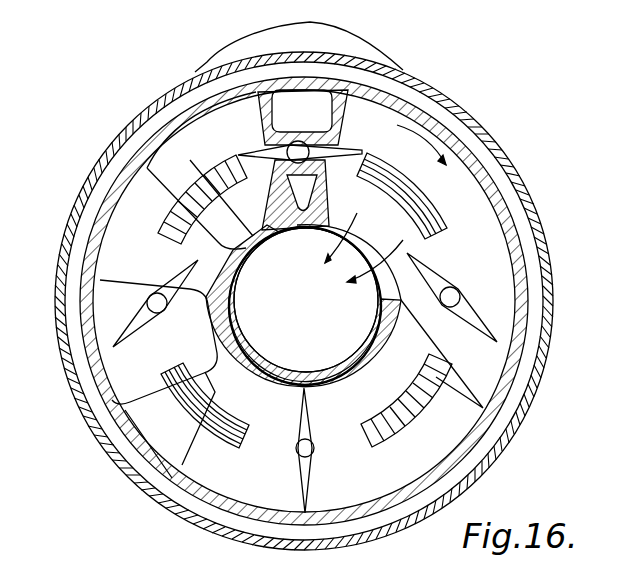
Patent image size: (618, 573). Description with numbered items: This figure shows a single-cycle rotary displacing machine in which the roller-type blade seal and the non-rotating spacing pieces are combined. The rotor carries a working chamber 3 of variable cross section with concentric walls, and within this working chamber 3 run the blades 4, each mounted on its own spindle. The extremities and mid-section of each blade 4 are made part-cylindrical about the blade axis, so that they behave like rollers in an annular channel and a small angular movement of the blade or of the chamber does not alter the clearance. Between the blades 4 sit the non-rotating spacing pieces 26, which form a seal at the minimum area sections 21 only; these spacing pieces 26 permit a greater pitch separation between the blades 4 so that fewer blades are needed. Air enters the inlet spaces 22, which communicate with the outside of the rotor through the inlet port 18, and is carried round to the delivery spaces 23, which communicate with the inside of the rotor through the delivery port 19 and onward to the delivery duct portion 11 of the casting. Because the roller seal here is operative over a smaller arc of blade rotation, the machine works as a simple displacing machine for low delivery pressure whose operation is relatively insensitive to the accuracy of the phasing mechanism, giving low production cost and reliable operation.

The working chamber 3 is at (212, 477).
The blade 4 is at (350, 148).
The delivery duct portion 11 is at (345, 44).
The inlet port 18 is at (177, 166).
The delivery port 19 is at (386, 291).
The minimum area section 21 is at (332, 170).
The inlet space 22 is at (140, 265).
The delivery space 23 is at (487, 250).
The spacing piece 26 is at (428, 212).